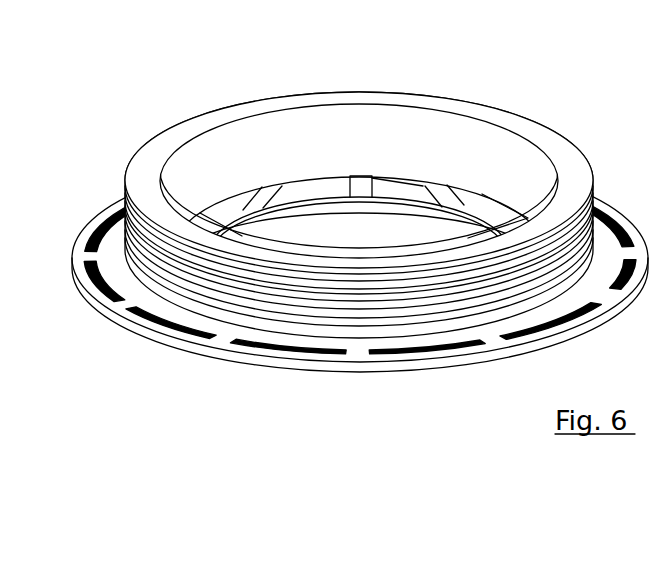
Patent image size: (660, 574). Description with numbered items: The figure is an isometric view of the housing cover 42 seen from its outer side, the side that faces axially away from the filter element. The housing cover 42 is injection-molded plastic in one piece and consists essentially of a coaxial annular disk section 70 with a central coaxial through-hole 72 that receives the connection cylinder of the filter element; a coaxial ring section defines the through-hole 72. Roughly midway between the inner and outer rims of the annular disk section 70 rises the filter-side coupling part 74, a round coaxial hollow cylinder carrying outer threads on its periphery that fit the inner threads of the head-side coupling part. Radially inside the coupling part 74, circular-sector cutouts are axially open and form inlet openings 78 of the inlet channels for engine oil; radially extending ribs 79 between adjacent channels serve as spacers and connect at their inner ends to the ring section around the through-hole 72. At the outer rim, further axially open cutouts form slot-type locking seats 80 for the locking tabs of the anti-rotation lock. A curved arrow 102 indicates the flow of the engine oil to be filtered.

The housing cover 42 is at (568, 95).
The annular disk section 70 is at (108, 248).
The through-hole 72 is at (377, 249).
The filter-side coupling part 74 is at (268, 118).
The inlet openings 78 is at (333, 190).
The ribs 79 is at (450, 187).
The locking seats 80 is at (0, 62).
The curved arrows 102 is at (405, 182).